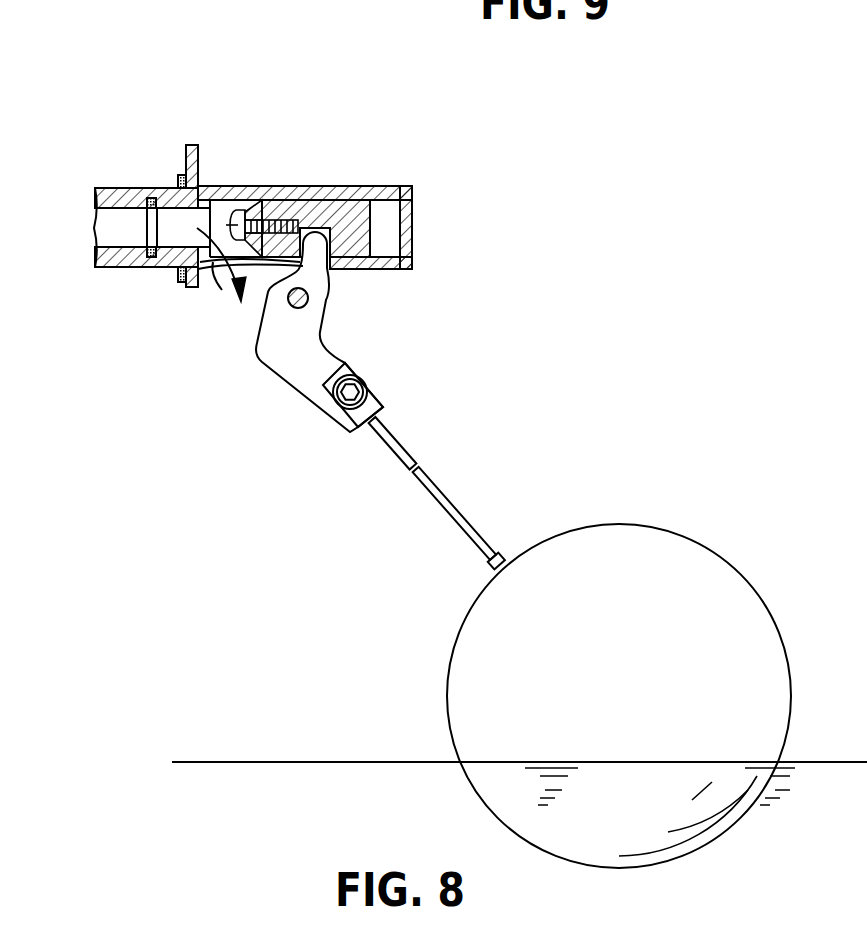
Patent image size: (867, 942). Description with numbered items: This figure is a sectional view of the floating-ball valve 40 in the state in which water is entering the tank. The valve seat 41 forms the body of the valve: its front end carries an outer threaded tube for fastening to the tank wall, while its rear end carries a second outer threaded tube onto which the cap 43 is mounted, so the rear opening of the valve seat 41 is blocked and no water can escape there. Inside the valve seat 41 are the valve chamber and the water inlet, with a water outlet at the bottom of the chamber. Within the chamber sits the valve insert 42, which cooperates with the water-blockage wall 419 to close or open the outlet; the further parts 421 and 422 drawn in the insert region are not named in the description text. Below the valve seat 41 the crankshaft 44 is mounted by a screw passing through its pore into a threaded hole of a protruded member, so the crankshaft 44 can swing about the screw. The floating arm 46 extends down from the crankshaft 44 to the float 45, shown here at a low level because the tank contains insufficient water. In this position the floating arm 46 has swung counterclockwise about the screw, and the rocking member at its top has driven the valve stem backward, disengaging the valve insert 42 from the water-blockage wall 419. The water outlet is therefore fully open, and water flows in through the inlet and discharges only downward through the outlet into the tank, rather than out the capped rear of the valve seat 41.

The floating-ball valve 40 is at (214, 62).
The valve seat 41 is at (279, 188).
The valve insert 42 is at (381, 210).
The adjusting screw 421 is at (237, 214).
The sealing block 422 is at (317, 202).
The cap 43 is at (411, 228).
The water-blockage wall 419 is at (228, 267).
The crankshaft 44 is at (285, 364).
The float 45 is at (648, 537).
The floating arm 46 is at (435, 483).